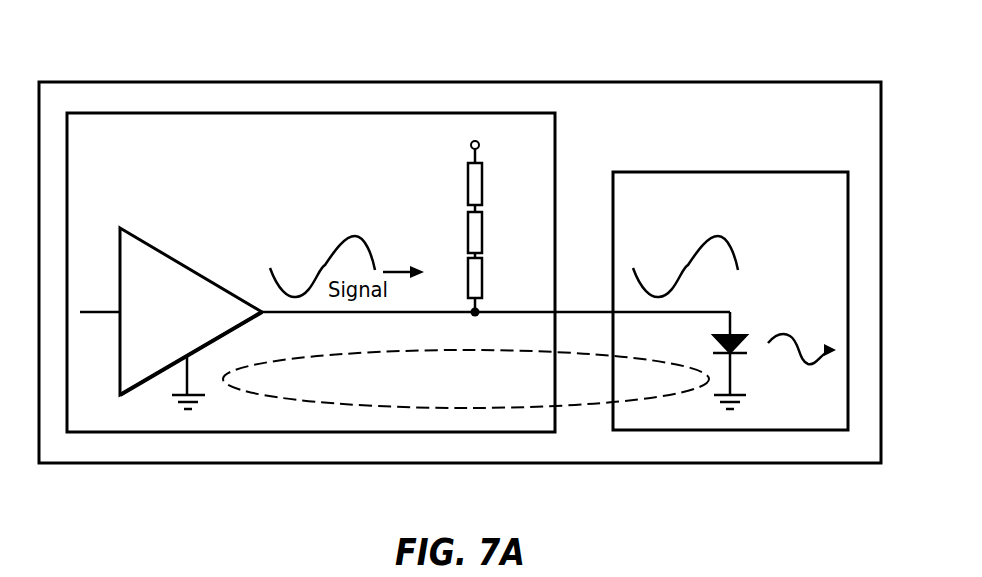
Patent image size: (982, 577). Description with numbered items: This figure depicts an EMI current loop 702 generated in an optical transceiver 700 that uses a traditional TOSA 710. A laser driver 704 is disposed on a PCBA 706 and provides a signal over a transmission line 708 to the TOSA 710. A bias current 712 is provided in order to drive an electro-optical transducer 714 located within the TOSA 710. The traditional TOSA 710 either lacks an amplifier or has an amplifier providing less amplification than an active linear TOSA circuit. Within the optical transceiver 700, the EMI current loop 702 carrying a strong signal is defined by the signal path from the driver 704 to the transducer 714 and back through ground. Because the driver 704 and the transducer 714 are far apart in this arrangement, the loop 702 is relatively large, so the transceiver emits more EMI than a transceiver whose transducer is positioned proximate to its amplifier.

The optical transceiver 700 is at (460, 82).
The EMI current loop 702 is at (567, 407).
The laser driver 704 is at (193, 268).
The PCBA 706 is at (329, 156).
The transmission line 708 is at (577, 310).
The traditional TOSA 710 is at (748, 207).
The bias current 712 is at (480, 144).
The electro-optical transducer 714 is at (735, 335).